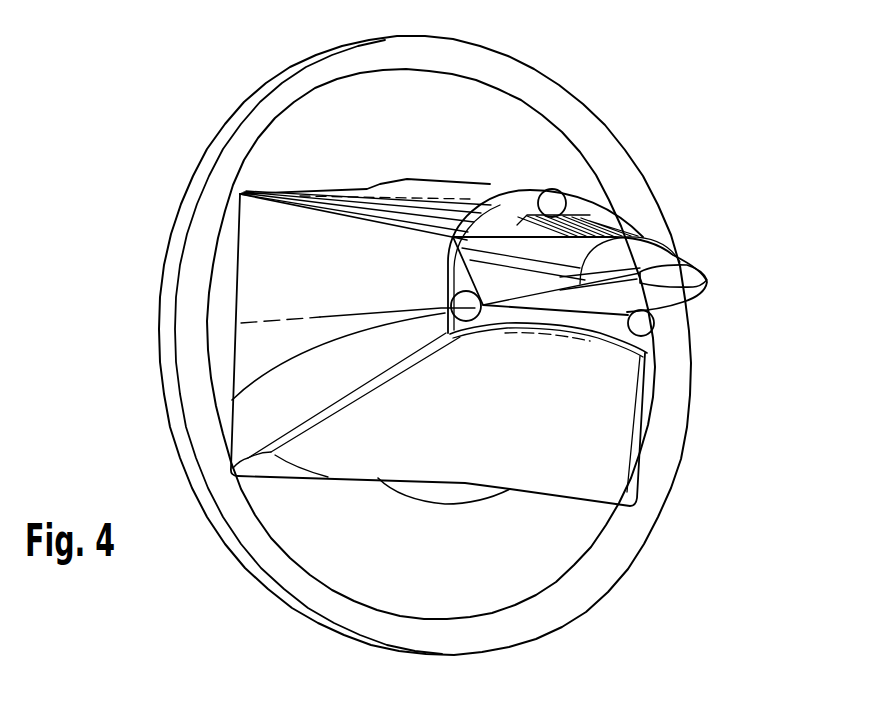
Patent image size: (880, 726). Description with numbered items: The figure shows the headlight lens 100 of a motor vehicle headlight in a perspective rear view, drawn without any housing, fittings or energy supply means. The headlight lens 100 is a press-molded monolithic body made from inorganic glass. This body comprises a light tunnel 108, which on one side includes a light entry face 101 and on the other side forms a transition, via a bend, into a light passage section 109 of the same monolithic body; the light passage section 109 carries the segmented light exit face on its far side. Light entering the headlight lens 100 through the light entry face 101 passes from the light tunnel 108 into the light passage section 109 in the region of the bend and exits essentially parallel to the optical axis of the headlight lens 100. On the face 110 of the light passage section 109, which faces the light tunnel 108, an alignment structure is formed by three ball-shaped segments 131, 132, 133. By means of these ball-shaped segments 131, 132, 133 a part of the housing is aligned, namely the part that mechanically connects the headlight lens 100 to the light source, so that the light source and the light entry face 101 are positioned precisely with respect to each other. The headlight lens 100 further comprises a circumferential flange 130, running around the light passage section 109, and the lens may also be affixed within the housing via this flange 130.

The headlight lens 100 is at (692, 103).
The light entry face 101 is at (708, 278).
The light tunnel 108 is at (633, 252).
The light passage section 109 is at (282, 268).
The face of the light passage section 110 is at (507, 218).
The circumferential flange 130 is at (210, 213).
The ball-shaped segment 131 is at (555, 198).
The ball-shaped segment 132 is at (241, 398).
The ball-shaped segment 133 is at (644, 323).